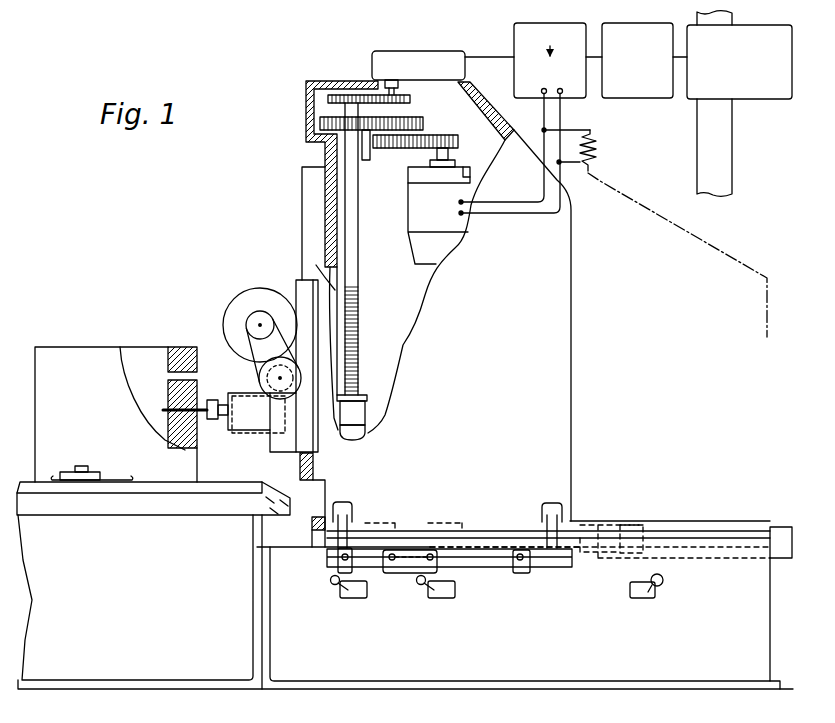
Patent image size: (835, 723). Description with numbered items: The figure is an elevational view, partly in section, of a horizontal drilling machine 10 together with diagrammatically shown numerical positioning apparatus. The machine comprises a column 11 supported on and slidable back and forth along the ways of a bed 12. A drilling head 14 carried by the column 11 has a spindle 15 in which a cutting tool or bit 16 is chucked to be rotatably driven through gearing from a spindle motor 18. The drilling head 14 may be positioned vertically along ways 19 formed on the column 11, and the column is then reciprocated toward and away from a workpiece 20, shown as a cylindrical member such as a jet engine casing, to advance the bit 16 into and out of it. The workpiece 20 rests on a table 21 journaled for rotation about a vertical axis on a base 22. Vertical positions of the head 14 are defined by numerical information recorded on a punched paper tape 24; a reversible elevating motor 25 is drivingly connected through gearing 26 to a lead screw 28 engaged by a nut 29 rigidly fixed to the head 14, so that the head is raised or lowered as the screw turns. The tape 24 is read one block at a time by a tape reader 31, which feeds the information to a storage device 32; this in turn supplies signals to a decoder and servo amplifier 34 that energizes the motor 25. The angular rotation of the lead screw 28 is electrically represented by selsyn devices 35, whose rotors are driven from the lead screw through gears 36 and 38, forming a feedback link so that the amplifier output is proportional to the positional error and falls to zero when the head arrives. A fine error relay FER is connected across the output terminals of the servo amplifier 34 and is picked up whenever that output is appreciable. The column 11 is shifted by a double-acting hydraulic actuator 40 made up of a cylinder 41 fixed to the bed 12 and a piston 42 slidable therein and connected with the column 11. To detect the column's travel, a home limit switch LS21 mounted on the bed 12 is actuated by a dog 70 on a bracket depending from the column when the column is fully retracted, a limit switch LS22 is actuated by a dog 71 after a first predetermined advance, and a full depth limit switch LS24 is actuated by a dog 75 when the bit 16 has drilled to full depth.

The horizontal drilling machine 10 is at (282, 189).
The column 11 is at (325, 213).
The bed 12 is at (443, 676).
The drilling head 14 is at (258, 433).
The spindle 15 is at (211, 421).
The cutting tool or bit 16 is at (170, 409).
The spindle motor 18 is at (237, 312).
The ways 19 is at (305, 276).
The workpiece 20 is at (184, 348).
The table 21 is at (167, 512).
The base 22 is at (97, 672).
The punched paper tape 24 is at (727, 176).
The reversible elevating motor 25 is at (422, 219).
The gearing 26 is at (411, 151).
The lead screw 28 is at (359, 353).
The nut 29 is at (362, 426).
The tape reader 31 is at (778, 99).
The storage device 32 is at (647, 98).
The decoder and servo amplifier 34 is at (537, 23).
The selsyn devices 35 is at (438, 57).
The gear 36 is at (341, 95).
The gear 38 is at (411, 100).
The double-acting hydraulic actuator 40 is at (777, 522).
The cylinder 41 is at (688, 560).
The piston 42 is at (650, 528).
The dog 70 is at (527, 574).
The dog 71 is at (410, 576).
The dog 75 is at (337, 571).
The home limit switch LS21 is at (640, 598).
The limit switch LS22 is at (446, 598).
The full depth limit switch LS24 is at (358, 598).
The fine error relay FER is at (594, 148).